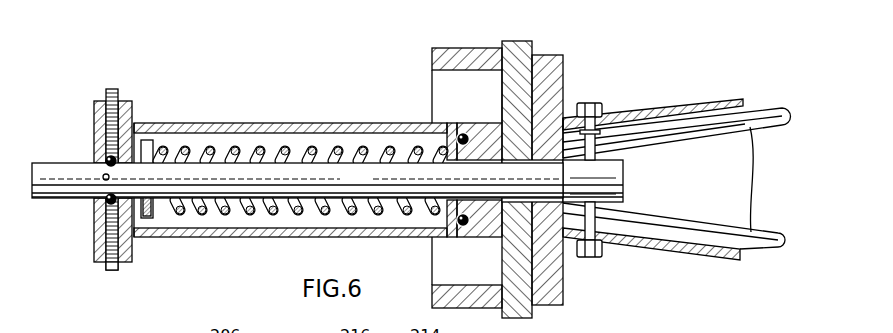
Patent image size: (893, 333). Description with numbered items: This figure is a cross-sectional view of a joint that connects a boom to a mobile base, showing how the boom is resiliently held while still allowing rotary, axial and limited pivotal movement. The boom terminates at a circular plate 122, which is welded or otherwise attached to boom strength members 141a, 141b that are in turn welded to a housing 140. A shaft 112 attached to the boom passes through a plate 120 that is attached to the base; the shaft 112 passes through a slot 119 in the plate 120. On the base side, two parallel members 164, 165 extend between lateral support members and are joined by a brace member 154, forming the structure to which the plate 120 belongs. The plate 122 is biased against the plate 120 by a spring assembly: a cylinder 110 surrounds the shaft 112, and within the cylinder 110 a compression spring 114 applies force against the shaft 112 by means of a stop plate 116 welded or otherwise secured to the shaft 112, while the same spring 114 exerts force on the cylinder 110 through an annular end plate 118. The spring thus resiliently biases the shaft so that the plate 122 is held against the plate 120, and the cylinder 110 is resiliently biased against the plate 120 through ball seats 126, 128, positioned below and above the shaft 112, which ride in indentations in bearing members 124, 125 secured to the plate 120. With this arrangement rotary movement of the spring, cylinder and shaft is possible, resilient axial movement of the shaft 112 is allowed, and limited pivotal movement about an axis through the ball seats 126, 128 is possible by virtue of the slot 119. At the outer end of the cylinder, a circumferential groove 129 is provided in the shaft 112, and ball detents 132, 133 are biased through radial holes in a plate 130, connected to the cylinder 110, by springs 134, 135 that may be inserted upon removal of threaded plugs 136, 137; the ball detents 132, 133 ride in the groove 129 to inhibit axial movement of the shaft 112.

The cylinder 110 is at (276, 238).
The shaft 112 is at (302, 164).
The compression spring 114 is at (223, 209).
The stop plate 116 is at (151, 218).
The annular end plate 118 is at (446, 131).
The slot 119 is at (498, 238).
The plate 120 is at (528, 50).
The circular plate 122 is at (558, 64).
The bearing member 124 is at (466, 225).
The bearing member 125 is at (486, 128).
The ball seat 126 is at (437, 244).
The ball seat 128 is at (462, 134).
The circumferential groove 129 is at (102, 179).
The plate 130 is at (97, 139).
The ball detent 132 is at (107, 203).
The ball detent 133 is at (106, 160).
The spring 134 is at (108, 232).
The spring 135 is at (95, 124).
The threaded plug 136 is at (107, 269).
The threaded plug 137 is at (119, 97).
The housing 140 is at (673, 105).
The boom strength member 141a is at (765, 114).
The boom strength member 141b is at (763, 235).
The brace member 154 is at (432, 122).
The parallel member 164 is at (473, 58).
The parallel member 165 is at (463, 309).